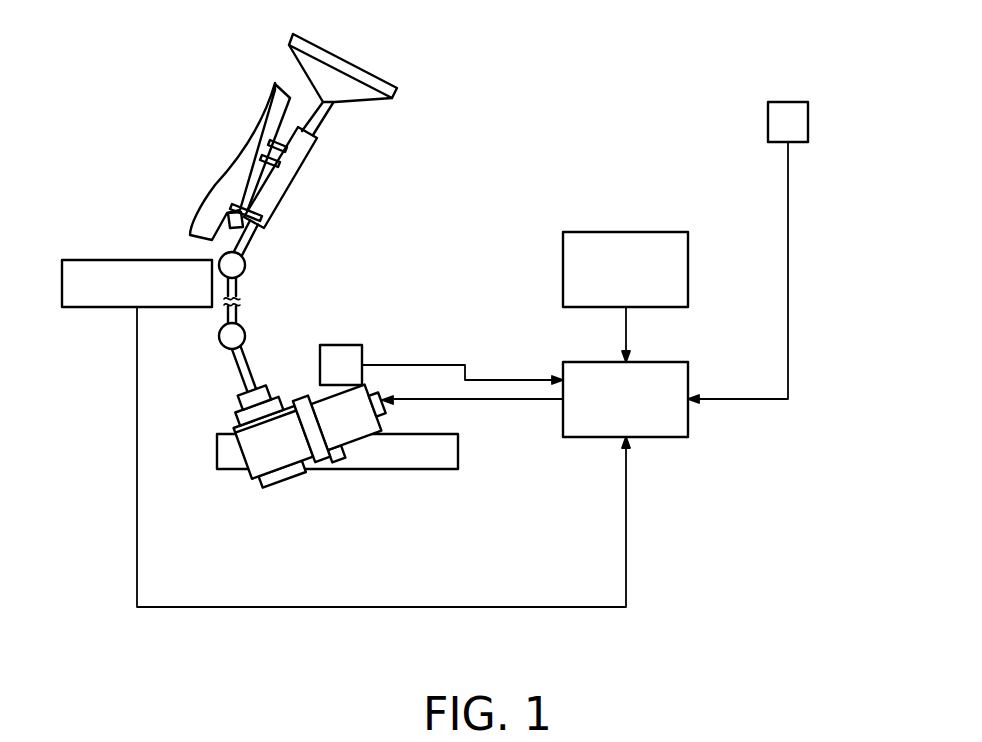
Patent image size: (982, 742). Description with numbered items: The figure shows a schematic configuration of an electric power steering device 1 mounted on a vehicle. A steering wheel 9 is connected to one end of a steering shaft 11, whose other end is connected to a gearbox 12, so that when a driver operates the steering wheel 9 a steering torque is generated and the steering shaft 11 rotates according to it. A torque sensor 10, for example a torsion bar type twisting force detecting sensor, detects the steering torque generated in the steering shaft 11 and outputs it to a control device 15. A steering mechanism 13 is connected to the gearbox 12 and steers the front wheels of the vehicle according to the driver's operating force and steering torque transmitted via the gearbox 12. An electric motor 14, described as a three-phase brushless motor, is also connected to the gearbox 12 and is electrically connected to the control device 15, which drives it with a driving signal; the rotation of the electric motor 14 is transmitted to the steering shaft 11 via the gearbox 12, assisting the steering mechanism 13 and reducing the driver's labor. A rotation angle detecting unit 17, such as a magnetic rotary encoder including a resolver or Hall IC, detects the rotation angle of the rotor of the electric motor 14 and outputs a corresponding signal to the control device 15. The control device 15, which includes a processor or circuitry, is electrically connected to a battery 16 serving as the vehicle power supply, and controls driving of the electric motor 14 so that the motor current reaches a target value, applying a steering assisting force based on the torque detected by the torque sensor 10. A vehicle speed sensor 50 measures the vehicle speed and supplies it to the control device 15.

The electric power steering device 1 is at (160, 133).
The steering wheel 9 is at (352, 63).
The torque sensor 10 is at (113, 260).
The steering shaft 11 is at (245, 363).
The gearbox 12 is at (283, 462).
The steering mechanism 13 is at (393, 463).
The electric motor 14 is at (376, 377).
The control device 15 is at (658, 362).
The battery 16 is at (658, 232).
The rotation angle detecting unit 17 is at (342, 345).
The vehicle speed sensor 50 is at (788, 102).